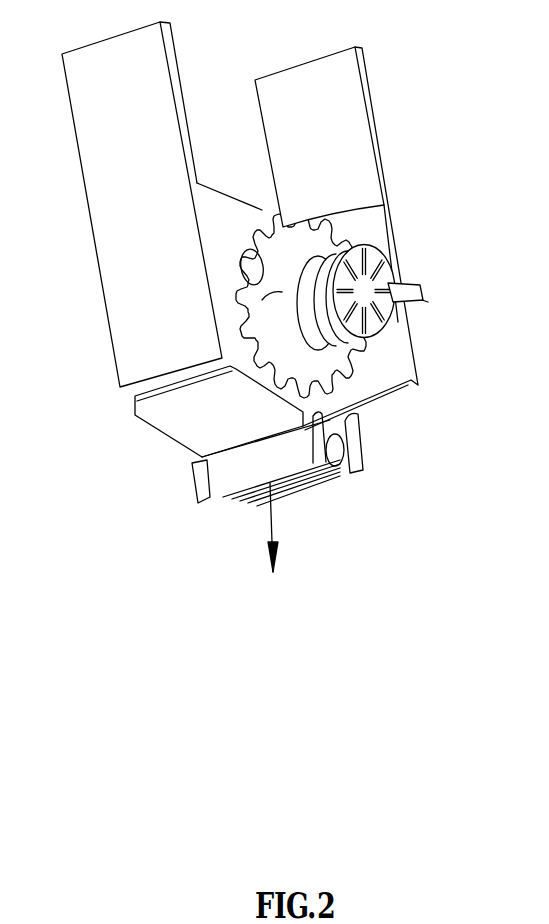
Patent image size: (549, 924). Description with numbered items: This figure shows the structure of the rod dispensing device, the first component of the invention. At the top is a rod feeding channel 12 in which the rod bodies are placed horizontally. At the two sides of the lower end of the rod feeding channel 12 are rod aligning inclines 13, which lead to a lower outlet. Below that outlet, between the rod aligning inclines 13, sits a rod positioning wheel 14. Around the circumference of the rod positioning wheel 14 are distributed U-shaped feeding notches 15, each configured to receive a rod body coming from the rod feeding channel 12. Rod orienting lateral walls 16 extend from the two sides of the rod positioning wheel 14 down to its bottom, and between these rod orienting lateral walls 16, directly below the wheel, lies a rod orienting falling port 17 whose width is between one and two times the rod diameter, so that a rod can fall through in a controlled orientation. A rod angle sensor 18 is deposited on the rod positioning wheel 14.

The rod feeding channel 12 is at (342, 155).
The rod aligning inclines 13 is at (330, 216).
The rod positioning wheel 14 is at (275, 312).
The U-shaped feeding notches 15 is at (266, 226).
The rod orienting lateral walls 16 is at (292, 412).
The rod orienting falling port 17 is at (212, 487).
The rod angle sensor 18 is at (367, 340).